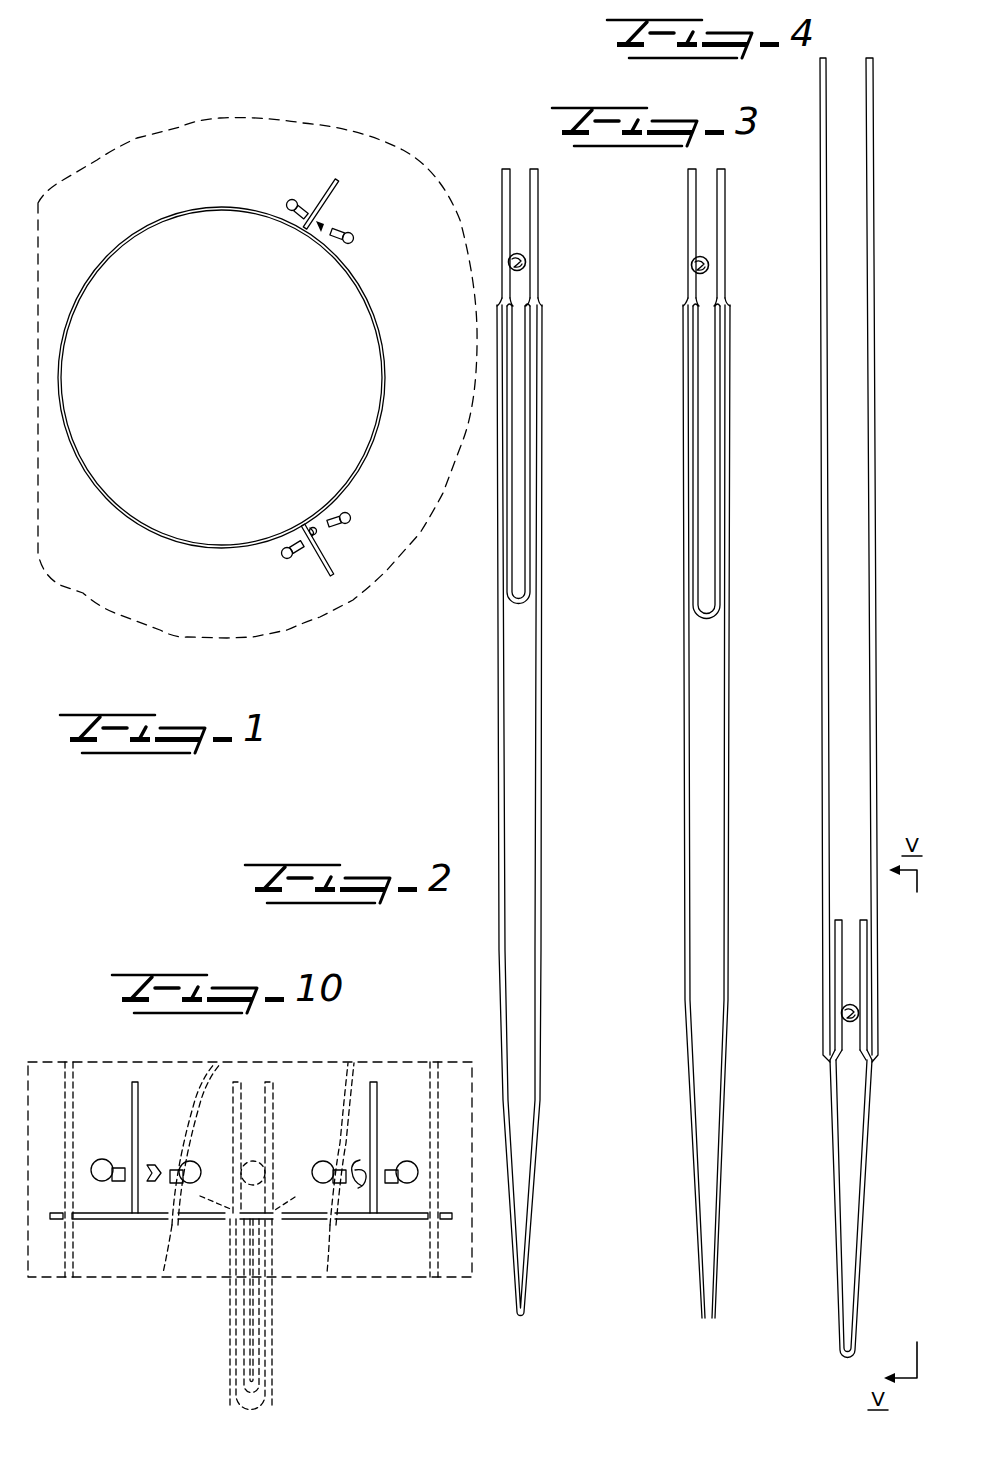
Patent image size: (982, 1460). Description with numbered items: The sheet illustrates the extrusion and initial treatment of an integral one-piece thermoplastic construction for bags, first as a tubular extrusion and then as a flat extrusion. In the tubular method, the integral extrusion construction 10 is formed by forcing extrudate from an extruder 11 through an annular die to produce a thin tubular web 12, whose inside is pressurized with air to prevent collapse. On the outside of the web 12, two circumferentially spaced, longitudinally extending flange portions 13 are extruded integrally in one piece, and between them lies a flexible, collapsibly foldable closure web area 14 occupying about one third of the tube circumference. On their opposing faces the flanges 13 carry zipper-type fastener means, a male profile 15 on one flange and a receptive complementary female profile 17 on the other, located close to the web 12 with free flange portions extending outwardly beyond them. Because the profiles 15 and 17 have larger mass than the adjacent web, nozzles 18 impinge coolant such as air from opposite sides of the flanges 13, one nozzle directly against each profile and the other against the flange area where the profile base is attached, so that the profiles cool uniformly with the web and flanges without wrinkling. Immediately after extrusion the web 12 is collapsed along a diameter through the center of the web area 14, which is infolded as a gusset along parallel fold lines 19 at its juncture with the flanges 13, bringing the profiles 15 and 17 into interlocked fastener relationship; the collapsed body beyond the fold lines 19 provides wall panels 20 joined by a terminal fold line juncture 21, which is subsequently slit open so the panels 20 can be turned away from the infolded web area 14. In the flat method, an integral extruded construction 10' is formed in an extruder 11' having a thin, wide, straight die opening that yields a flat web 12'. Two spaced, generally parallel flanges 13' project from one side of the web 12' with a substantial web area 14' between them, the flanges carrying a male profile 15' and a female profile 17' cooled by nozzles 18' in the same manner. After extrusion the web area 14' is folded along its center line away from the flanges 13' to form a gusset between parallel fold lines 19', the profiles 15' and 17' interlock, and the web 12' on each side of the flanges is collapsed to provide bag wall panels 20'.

In FIG. 1, the integral extrusion construction 10 is at (171, 576).
In FIG. 2, the integral extrusion construction 10 is at (464, 685).
In FIG. 1, the extruder 11 is at (257, 393).
In FIG. 1, the tubular web 12 is at (232, 576).
In FIG. 1, the flange portions 13 is at (331, 395).
In FIG. 2, the flange portions 13 is at (545, 233).
In FIG. 3, the flange portions 13 is at (729, 223).
In FIG. 4, the flange portions 13 is at (879, 985).
In FIG. 1, the closure web area 14 is at (221, 377).
In FIG. 2, the closure web area 14 is at (547, 455).
In FIG. 3, the closure web area 14 is at (730, 462).
In FIG. 4, the closure web area 14 is at (875, 1209).
In FIG. 1, the male profile 15 is at (345, 219).
In FIG. 2, the male profile 15 is at (545, 248).
In FIG. 3, the male profile 15 is at (729, 256).
In FIG. 4, the male profile 15 is at (823, 1047).
In FIG. 1, the female profile 17 is at (337, 544).
In FIG. 2, the female profile 17 is at (554, 273).
In FIG. 3, the female profile 17 is at (736, 227).
In FIG. 4, the female profile 17 is at (889, 1031).
In FIG. 1, the nozzles 18 is at (328, 380).
In FIG. 2, the fold lines 19 is at (528, 280).
In FIG. 3, the fold lines 19 is at (729, 296).
In FIG. 4, the fold lines 19 is at (877, 1071).
In FIG. 2, the wall panels 20 is at (489, 810).
In FIG. 3, the wall panels 20 is at (681, 811).
In FIG. 4, the wall panels 20 is at (869, 560).
In FIG. 2, the terminal fold line juncture 21 is at (512, 1316).
In FIG. 10, the integral extruded construction 10' is at (130, 1292).
In FIG. 10, the extruder 11' is at (250, 1144).
In FIG. 10, the flat web 12' is at (251, 1238).
In FIG. 10, the flanges 13' is at (251, 1169).
In FIG. 10, the web area 14' is at (260, 1228).
In FIG. 10, the male profile 15' is at (227, 1156).
In FIG. 10, the female profile 17' is at (319, 1153).
In FIG. 10, the nozzles 18' is at (257, 1146).
In FIG. 10, the fold lines 19' is at (248, 1198).
In FIG. 10, the bag wall panels 20' is at (270, 1314).